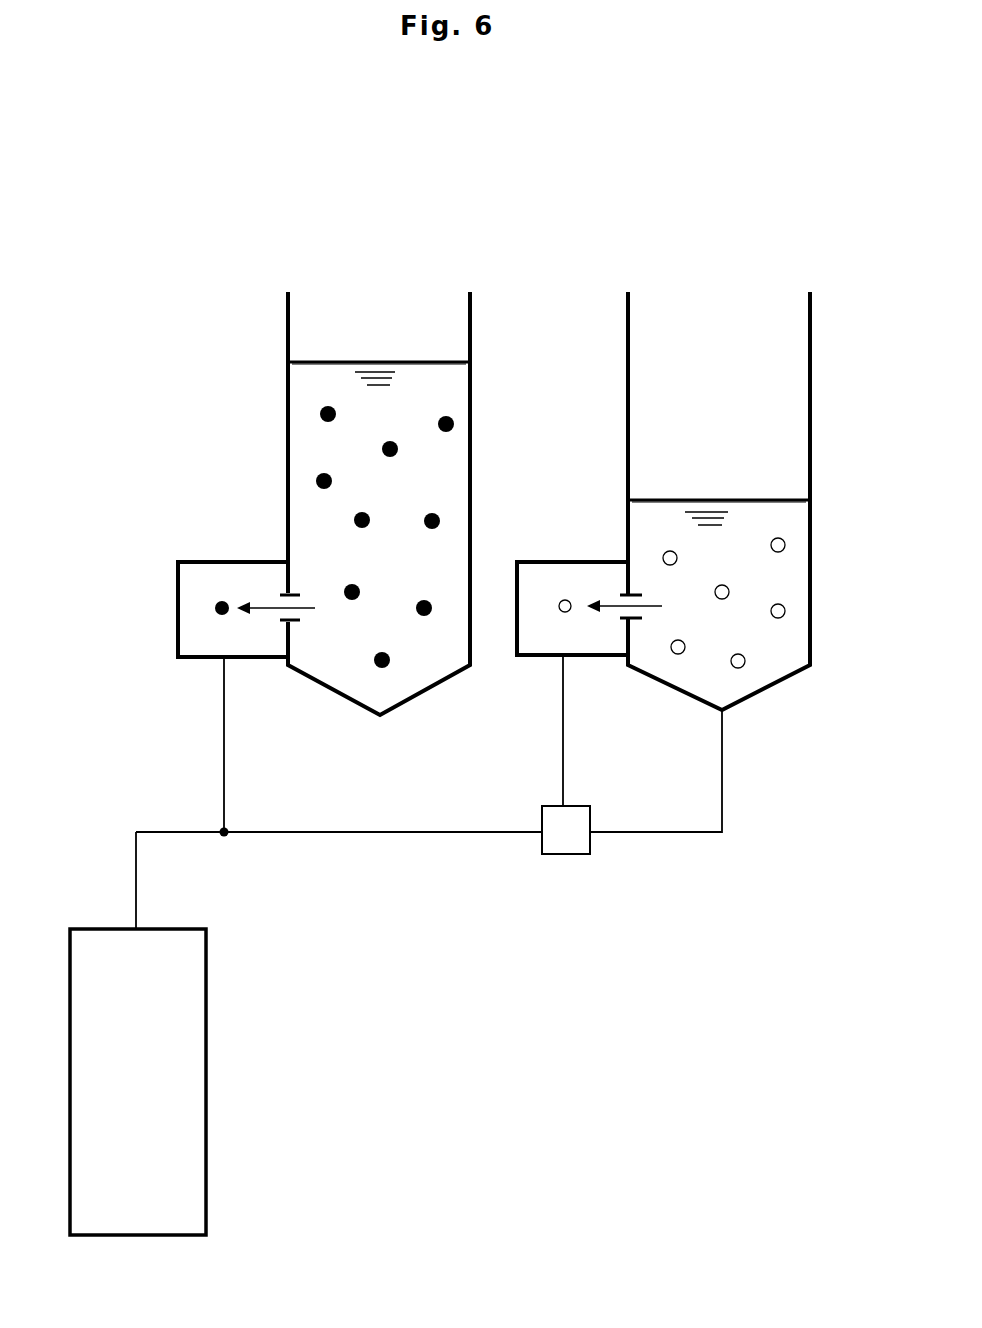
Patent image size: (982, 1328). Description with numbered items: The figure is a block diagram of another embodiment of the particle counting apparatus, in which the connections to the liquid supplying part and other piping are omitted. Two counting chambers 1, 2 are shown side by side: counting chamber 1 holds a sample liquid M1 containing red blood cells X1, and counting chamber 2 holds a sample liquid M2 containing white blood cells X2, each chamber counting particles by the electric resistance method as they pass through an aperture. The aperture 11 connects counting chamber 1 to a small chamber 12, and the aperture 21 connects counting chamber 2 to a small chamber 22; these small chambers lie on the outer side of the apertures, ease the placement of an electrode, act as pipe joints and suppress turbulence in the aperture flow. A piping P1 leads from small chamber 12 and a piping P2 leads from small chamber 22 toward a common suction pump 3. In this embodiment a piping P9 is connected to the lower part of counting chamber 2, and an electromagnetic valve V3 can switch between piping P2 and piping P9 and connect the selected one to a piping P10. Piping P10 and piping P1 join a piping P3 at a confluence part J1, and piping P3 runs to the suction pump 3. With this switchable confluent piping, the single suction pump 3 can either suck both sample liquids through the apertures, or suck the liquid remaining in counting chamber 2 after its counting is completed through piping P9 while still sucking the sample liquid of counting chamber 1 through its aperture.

The counting chamber 1 is at (288, 405).
The counting chamber 2 is at (628, 405).
The suction pump 3 is at (193, 1100).
The aperture 11 is at (280, 592).
The small chamber 12 is at (208, 560).
The aperture 21 is at (620, 592).
The small chamber 22 is at (565, 560).
The sample liquid M1 is at (317, 373).
The sample liquid M2 is at (658, 518).
The red blood cell X1 is at (440, 416).
The white blood cell X2 is at (778, 537).
The piping P1 is at (224, 762).
The piping P2 is at (563, 760).
The piping P3 is at (136, 905).
The piping P9 is at (722, 768).
The piping P10 is at (412, 833).
The confluence part J1 is at (226, 836).
The electromagnetic valve V3 is at (572, 840).